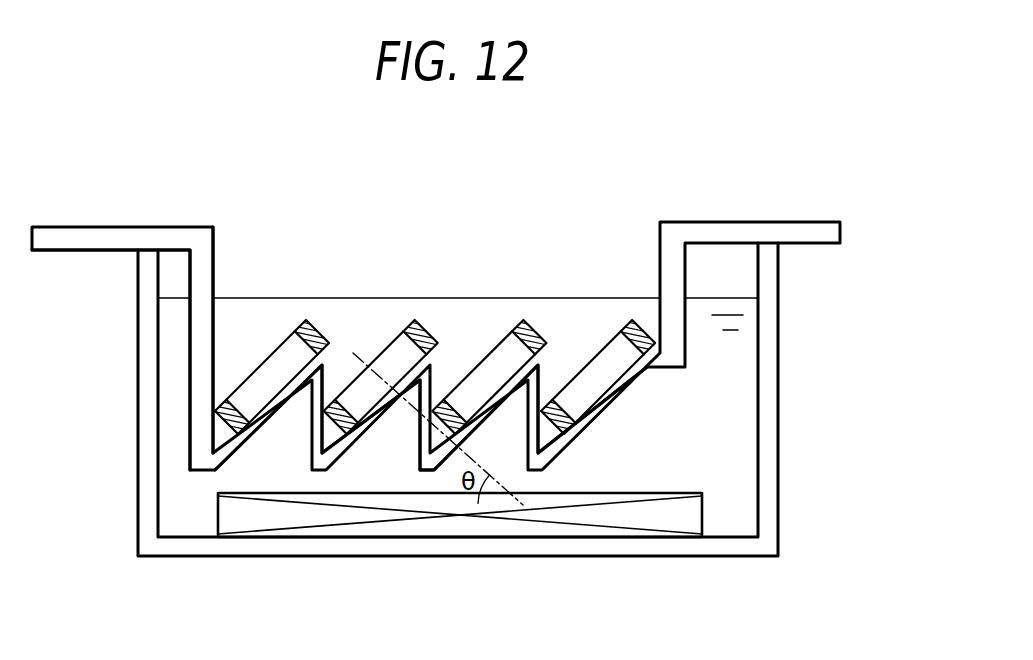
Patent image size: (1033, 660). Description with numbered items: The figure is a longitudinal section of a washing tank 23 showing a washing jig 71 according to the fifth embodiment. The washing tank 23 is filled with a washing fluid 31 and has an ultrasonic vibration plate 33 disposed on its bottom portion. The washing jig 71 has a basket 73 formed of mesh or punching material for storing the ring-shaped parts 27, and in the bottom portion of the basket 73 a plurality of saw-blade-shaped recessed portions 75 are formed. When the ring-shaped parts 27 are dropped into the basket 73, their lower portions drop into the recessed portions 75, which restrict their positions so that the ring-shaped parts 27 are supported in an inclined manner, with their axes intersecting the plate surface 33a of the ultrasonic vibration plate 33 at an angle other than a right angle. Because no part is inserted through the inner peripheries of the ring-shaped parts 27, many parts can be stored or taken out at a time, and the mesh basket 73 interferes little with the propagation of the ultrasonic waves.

The washing jig 71 is at (436, 306).
The basket 73 is at (190, 364).
The saw-blade-shaped recessed portions 75 is at (363, 412).
The ring-shaped parts 27 is at (432, 322).
The washing tank 23 is at (767, 358).
The washing fluid 31 is at (748, 312).
The ultrasonic vibration plate 33 is at (534, 551).
The plate surface 33a is at (614, 490).